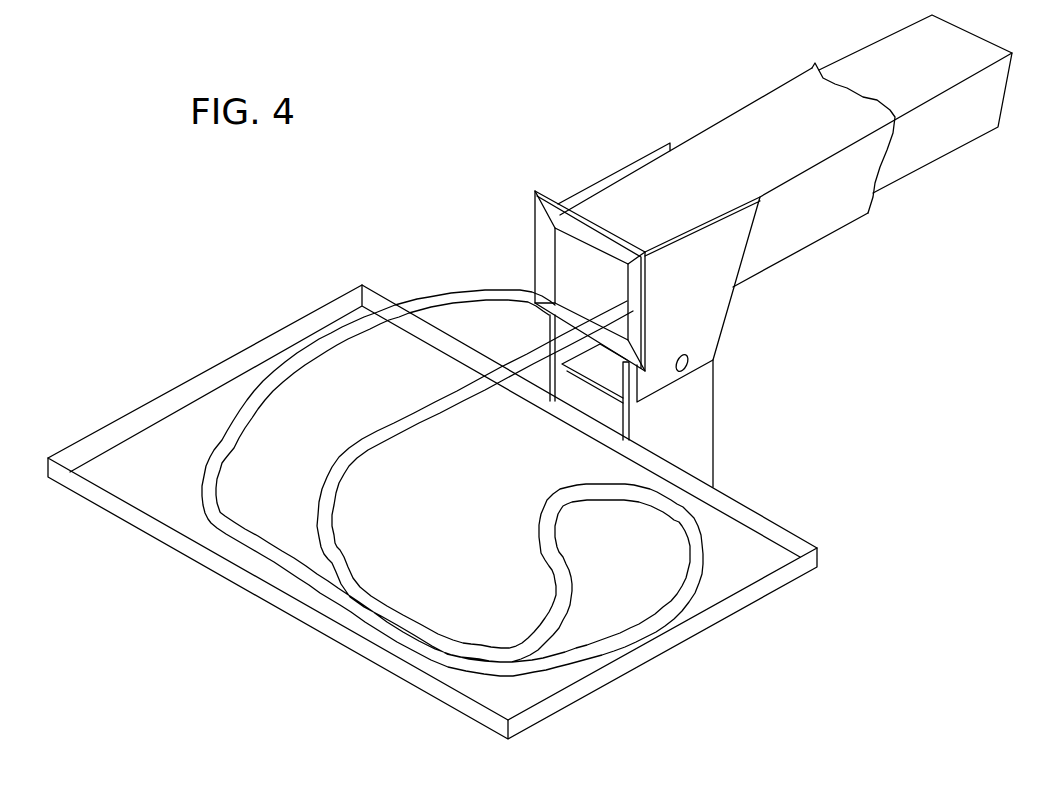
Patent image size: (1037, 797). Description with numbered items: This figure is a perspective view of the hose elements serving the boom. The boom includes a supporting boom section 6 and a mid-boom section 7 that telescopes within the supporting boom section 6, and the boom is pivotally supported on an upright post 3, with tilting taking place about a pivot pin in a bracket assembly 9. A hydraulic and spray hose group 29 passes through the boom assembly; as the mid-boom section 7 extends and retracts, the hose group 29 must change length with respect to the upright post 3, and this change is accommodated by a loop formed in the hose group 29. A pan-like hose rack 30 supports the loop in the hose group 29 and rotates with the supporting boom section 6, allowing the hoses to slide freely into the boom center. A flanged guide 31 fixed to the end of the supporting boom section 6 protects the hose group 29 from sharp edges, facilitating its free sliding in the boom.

The upright post 3 is at (712, 428).
The supporting boom section 6 is at (739, 111).
The mid-boom section 7 is at (883, 44).
The bracket assembly 9 is at (722, 326).
The hydraulic and spray hose group 29 is at (333, 507).
The hose rack 30 is at (131, 413).
The flanged guide 31 is at (533, 231).